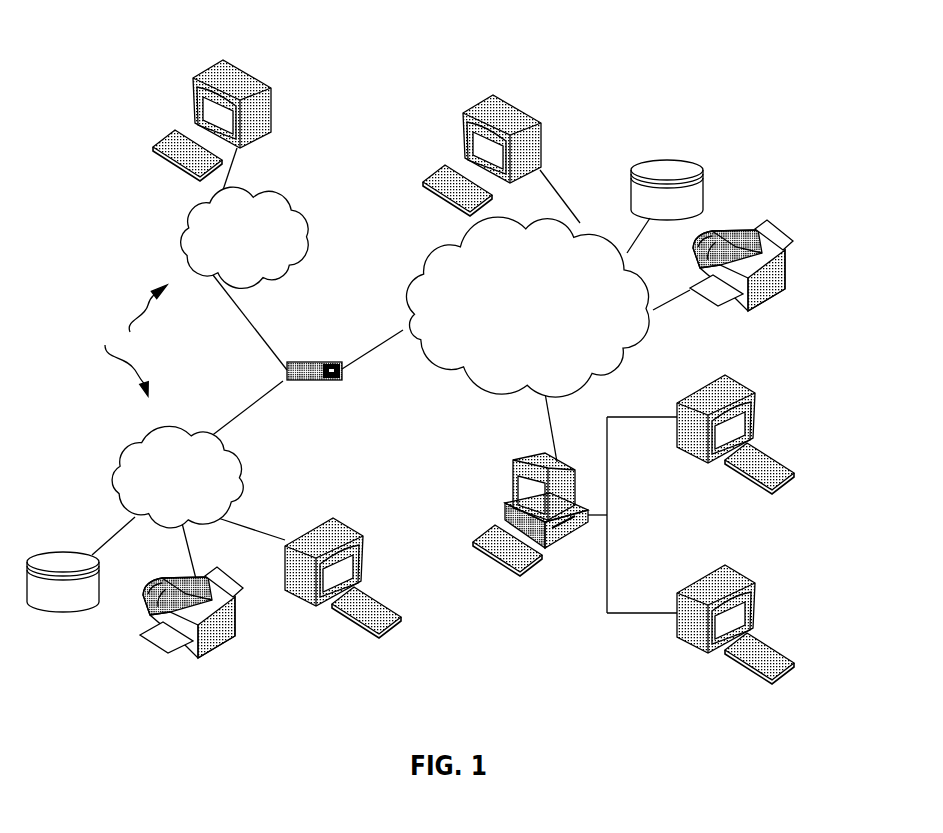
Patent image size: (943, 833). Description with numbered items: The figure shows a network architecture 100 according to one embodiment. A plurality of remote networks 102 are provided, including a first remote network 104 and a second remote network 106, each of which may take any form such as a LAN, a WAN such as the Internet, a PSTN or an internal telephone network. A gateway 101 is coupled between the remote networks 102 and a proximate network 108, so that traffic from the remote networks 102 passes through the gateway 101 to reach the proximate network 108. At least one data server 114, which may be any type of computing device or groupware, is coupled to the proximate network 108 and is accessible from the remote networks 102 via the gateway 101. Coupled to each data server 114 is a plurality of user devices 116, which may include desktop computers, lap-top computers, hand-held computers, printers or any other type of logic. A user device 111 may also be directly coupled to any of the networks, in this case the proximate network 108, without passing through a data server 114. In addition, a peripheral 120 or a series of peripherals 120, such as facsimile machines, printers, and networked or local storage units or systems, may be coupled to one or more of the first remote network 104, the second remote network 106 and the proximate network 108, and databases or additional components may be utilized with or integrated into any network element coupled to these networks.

The network architecture 100 is at (142, 50).
The gateway 101 is at (302, 362).
The remote networks 102 is at (128, 340).
The first remote network 104 is at (115, 456).
The second remote network 106 is at (306, 210).
The proximate network 108 is at (622, 369).
The user device 111 is at (541, 124).
The data server 114 is at (522, 477).
The user devices 116 is at (272, 93).
The peripheral 120 is at (703, 168).